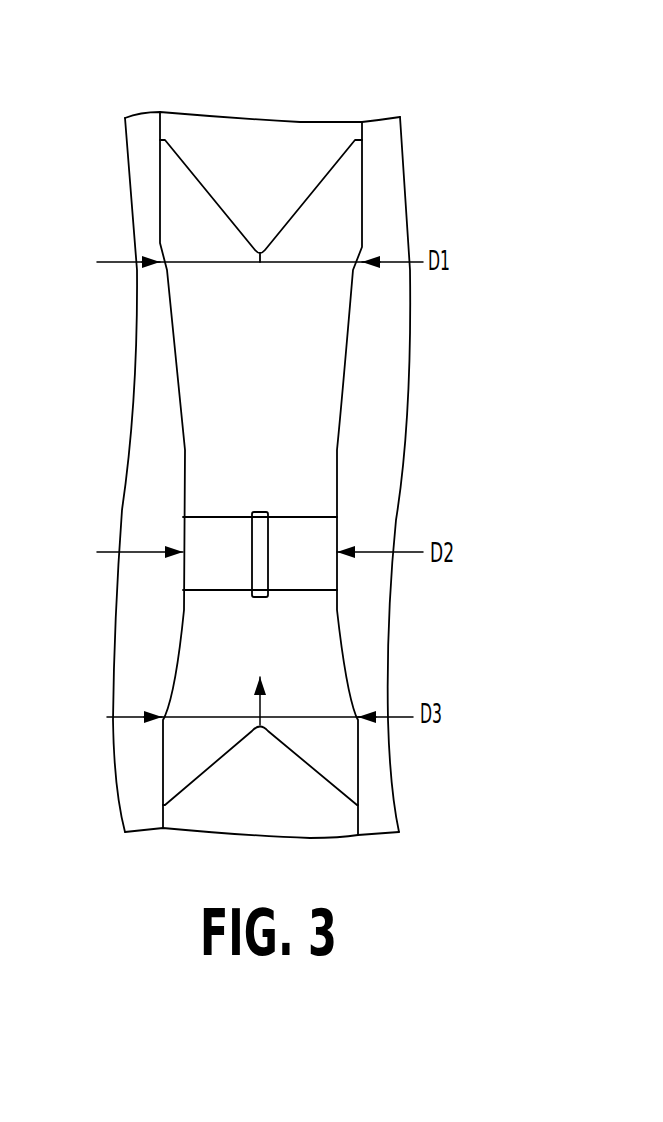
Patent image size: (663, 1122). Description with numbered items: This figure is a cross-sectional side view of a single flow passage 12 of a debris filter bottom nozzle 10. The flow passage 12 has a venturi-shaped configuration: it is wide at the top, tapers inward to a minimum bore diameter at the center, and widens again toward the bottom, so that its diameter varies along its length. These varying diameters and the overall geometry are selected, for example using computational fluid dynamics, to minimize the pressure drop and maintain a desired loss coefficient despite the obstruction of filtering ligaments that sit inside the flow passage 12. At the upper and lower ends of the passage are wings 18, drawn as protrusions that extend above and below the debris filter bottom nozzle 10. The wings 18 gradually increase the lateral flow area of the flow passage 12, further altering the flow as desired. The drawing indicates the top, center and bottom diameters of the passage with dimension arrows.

The debris filter bottom nozzle 10 is at (395, 390).
The flow passage 12 is at (267, 158).
The wings 18 is at (170, 177).